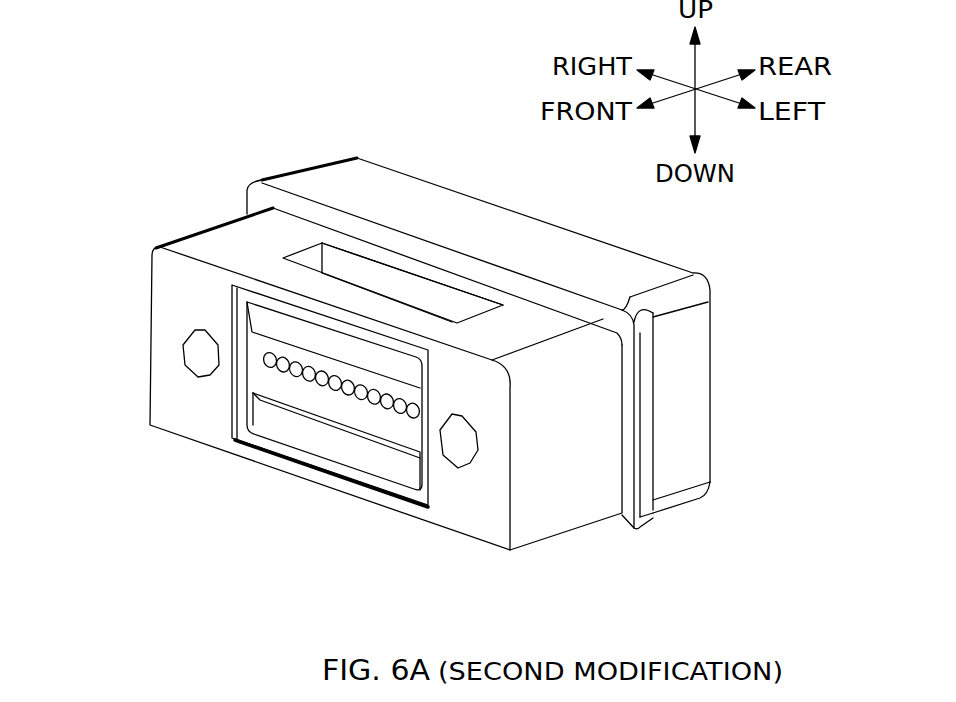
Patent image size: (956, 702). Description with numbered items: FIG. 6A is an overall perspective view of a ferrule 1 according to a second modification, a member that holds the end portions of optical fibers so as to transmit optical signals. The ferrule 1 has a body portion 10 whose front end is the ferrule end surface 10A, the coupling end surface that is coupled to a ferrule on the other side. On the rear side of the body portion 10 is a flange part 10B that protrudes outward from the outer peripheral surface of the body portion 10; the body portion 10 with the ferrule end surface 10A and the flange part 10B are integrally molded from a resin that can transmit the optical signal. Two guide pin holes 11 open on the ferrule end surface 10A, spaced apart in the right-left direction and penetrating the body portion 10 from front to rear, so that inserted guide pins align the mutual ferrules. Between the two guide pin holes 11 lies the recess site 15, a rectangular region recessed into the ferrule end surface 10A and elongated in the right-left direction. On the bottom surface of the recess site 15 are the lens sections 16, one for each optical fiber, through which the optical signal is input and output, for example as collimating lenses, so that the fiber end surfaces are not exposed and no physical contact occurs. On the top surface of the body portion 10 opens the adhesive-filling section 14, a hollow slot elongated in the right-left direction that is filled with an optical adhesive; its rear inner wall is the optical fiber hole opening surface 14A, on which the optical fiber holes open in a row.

The ferrule 1 is at (143, 152).
The body portion 10 is at (572, 508).
The ferrule end surface 10A is at (442, 514).
The flange part 10B is at (625, 520).
The guide pin hole 11 is at (192, 353).
The adhesive-filling section 14 is at (379, 276).
The optical fiber hole opening surface 14A is at (438, 297).
The recess site 15 is at (291, 404).
The lens section 16 is at (356, 391).